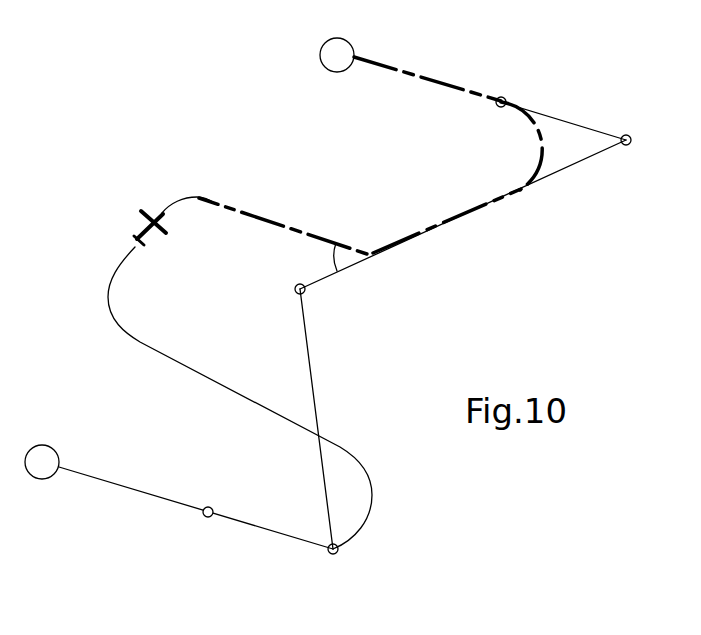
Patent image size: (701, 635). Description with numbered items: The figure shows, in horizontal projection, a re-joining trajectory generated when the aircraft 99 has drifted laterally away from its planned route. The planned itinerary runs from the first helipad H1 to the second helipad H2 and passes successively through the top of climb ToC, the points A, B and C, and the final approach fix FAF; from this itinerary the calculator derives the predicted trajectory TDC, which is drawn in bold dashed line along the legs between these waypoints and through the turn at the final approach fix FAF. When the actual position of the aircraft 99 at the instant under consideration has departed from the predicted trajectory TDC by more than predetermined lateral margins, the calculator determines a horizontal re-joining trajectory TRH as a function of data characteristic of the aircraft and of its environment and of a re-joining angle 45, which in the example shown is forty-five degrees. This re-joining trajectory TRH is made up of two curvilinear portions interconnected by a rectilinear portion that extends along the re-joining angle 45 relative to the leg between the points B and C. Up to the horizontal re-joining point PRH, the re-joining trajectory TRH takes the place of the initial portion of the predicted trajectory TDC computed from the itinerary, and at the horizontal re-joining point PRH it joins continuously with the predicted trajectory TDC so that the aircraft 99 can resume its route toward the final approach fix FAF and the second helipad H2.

The aircraft 99 is at (136, 237).
The first helipad H1 is at (42, 462).
The second helipad H2 is at (337, 55).
The point A is at (332, 565).
The point B is at (288, 295).
The point C is at (639, 140).
The final approach fix FAF is at (504, 87).
The top of climb ToC is at (196, 508).
The predicted trajectory TDC is at (428, 78).
The horizontal re-joining trajectory TRH is at (255, 212).
The horizontal re-joining point PRH is at (407, 251).
The re-joining angle 45 is at (322, 273).